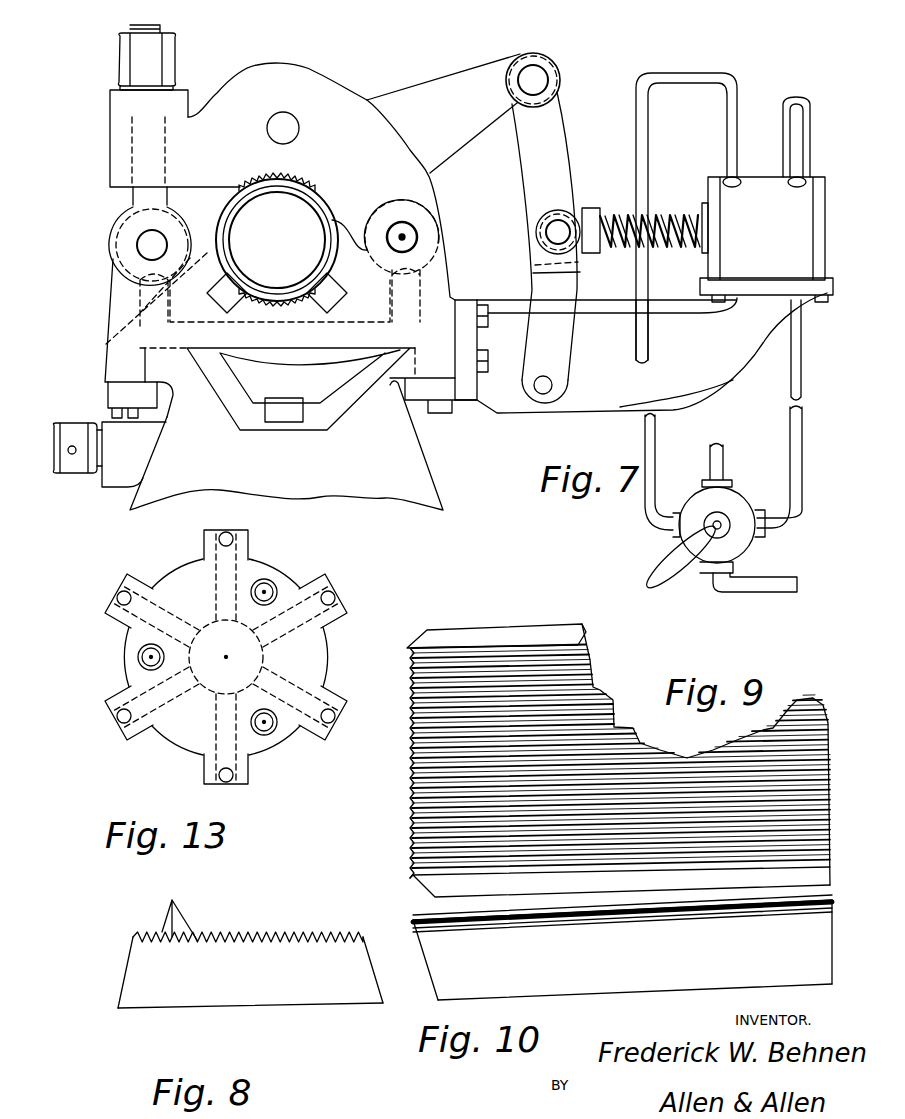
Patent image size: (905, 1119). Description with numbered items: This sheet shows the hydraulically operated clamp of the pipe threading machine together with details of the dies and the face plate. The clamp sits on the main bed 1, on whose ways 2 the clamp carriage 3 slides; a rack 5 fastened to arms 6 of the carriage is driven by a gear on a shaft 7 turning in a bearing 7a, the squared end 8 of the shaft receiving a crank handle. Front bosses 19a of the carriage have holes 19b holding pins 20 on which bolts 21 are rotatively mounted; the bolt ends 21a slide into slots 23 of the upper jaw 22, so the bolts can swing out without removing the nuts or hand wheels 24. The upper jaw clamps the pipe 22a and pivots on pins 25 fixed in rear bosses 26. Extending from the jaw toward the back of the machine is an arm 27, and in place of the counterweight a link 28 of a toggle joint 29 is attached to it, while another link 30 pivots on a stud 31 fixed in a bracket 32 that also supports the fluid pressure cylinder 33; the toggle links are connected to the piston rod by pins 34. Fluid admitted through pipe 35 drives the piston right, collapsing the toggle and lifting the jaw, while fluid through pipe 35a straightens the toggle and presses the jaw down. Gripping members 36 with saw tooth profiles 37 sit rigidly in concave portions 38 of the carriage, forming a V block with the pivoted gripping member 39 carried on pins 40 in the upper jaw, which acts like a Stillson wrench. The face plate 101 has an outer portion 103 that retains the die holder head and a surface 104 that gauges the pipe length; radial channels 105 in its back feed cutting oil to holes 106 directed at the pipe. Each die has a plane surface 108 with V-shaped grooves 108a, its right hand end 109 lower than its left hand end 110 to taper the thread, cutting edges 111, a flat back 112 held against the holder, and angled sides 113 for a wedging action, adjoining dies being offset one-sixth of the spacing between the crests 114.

In FIG. 7, the main bed 1 is at (417, 487).
In FIG. 7, the ways 2 is at (167, 367).
In FIG. 7, the clamp carriage 3 is at (130, 298).
In FIG. 7, the rack 5 is at (282, 418).
In FIG. 7, the arms 6 is at (230, 393).
In FIG. 7, the shaft 7 is at (45, 445).
In FIG. 7, the bearing 7a is at (122, 475).
In FIG. 7, the squared shaft end 8 is at (48, 462).
In FIG. 7, the front bosses 19a is at (115, 252).
In FIG. 7, the holes 19b is at (140, 240).
In FIG. 7, the pins 20 is at (150, 237).
In FIG. 7, the bolts 21 is at (157, 200).
In FIG. 7, the bolt ends 21a is at (200, 94).
In FIG. 7, the upper jaw 22 is at (300, 83).
In FIG. 7, the pipe 22a is at (413, 195).
In FIG. 7, the slots 23 is at (128, 137).
In FIG. 7, the nuts or hand wheels 24 is at (165, 58).
In FIG. 7, the pins 25 is at (418, 237).
In FIG. 7, the rear bosses 26 is at (423, 248).
In FIG. 7, the bracket 27 is at (455, 93).
In FIG. 7, the link 28 is at (553, 110).
In FIG. 7, the toggle joint 29 is at (538, 228).
In FIG. 7, the link 30 is at (558, 348).
In FIG. 7, the stud 31 is at (547, 393).
In FIG. 7, the bracket 32 is at (687, 387).
In FIG. 7, the fluid pressure cylinder 33 is at (752, 187).
In FIG. 7, the pins 34 is at (560, 227).
In FIG. 7, the pipe 35 is at (650, 352).
In FIG. 7, the pipe 35a is at (796, 343).
In FIG. 7, the gripping members 36 is at (237, 308).
In FIG. 7, the saw tooth profiles 37 is at (300, 263).
In FIG. 7, the concave portions 38 is at (285, 310).
In FIG. 7, the gripping member 39 is at (300, 170).
In FIG. 7, the pins 40 is at (287, 127).
In FIG. 13, the face plate 101 is at (277, 583).
In FIG. 13, the outer portion 103 is at (307, 653).
In FIG. 13, the surface 104 is at (195, 727).
In FIG. 13, the radial channels 105 is at (240, 563).
In FIG. 13, the holes 106 is at (334, 596).
In FIG. 9, the die surface 108 is at (427, 803).
In FIG. 8, the die surface 108 is at (225, 932).
In FIG. 10, the die surface 108 is at (413, 920).
In FIG. 9, the V-shaped grooves 108a is at (413, 775).
In FIG. 8, the V-shaped grooves 108a is at (267, 938).
In FIG. 9, the right hand end 109 is at (473, 640).
In FIG. 8, the right hand end 109 is at (363, 937).
In FIG. 8, the left hand end 110 is at (133, 935).
In FIG. 9, the cutting edges 111 is at (413, 832).
In FIG. 10, the cutting edges 111 is at (412, 922).
In FIG. 8, the back 112 is at (310, 1005).
In FIG. 10, the back 112 is at (588, 997).
In FIG. 8, the sides 113 is at (127, 965).
In FIG. 10, the sides 113 is at (609, 952).
In FIG. 8, the crests 114 is at (181, 906).